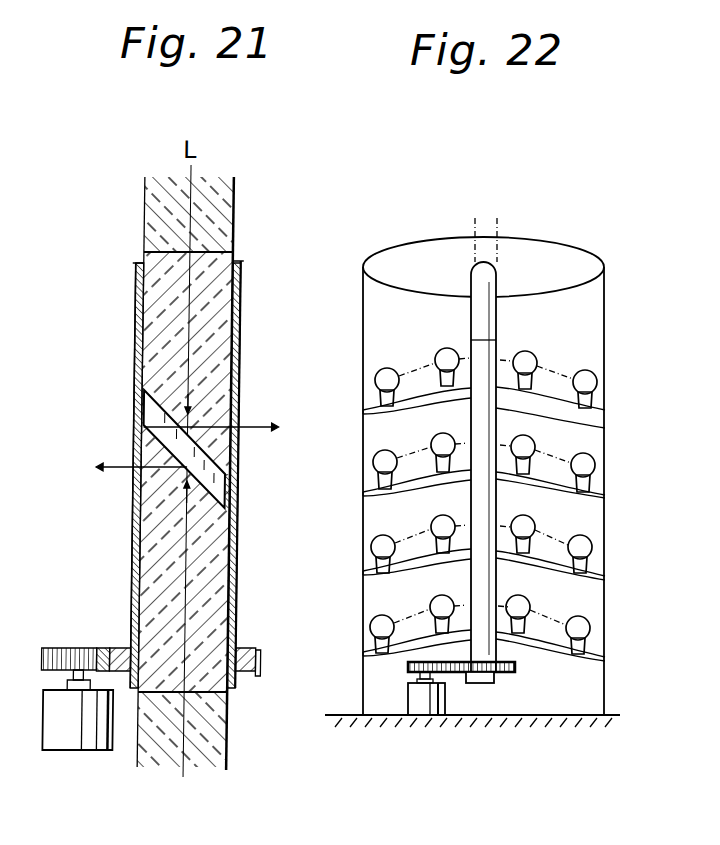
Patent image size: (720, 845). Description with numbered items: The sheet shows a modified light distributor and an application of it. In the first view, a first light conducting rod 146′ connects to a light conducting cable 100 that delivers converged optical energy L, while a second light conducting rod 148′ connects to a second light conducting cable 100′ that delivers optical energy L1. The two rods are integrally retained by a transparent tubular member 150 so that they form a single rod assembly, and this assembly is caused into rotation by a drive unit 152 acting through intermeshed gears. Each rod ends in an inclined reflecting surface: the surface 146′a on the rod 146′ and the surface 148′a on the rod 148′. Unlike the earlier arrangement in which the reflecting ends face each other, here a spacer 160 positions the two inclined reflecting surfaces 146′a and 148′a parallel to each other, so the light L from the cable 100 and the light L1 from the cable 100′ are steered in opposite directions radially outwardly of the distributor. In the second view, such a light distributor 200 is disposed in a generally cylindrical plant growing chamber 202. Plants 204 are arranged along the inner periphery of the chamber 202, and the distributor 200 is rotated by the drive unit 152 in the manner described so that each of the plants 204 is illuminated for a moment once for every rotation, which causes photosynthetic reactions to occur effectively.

In FIG. 21, the light conducting cable 100 is at (234, 198).
In FIG. 22, the light conducting cable 100 is at (503, 223).
In FIG. 21, the second light conducting cable 100′ is at (239, 729).
In FIG. 21, the transparent tubular member 150 is at (243, 302).
In FIG. 21, the light conducting rod 146′ is at (228, 356).
In FIG. 21, the inclined reflecting surface 146′a is at (160, 443).
In FIG. 21, the light conducting rod 148′ is at (223, 553).
In FIG. 21, the inclined reflecting surface 148′a is at (228, 459).
In FIG. 21, the spacer 160 is at (236, 492).
In FIG. 21, the drive unit 152 is at (89, 748).
In FIG. 22, the drive unit 152 is at (445, 700).
In FIG. 22, the plant growing chamber 202 is at (597, 316).
In FIG. 22, the plants 204 is at (379, 378).
In FIG. 22, the light distributor 200 is at (604, 429).